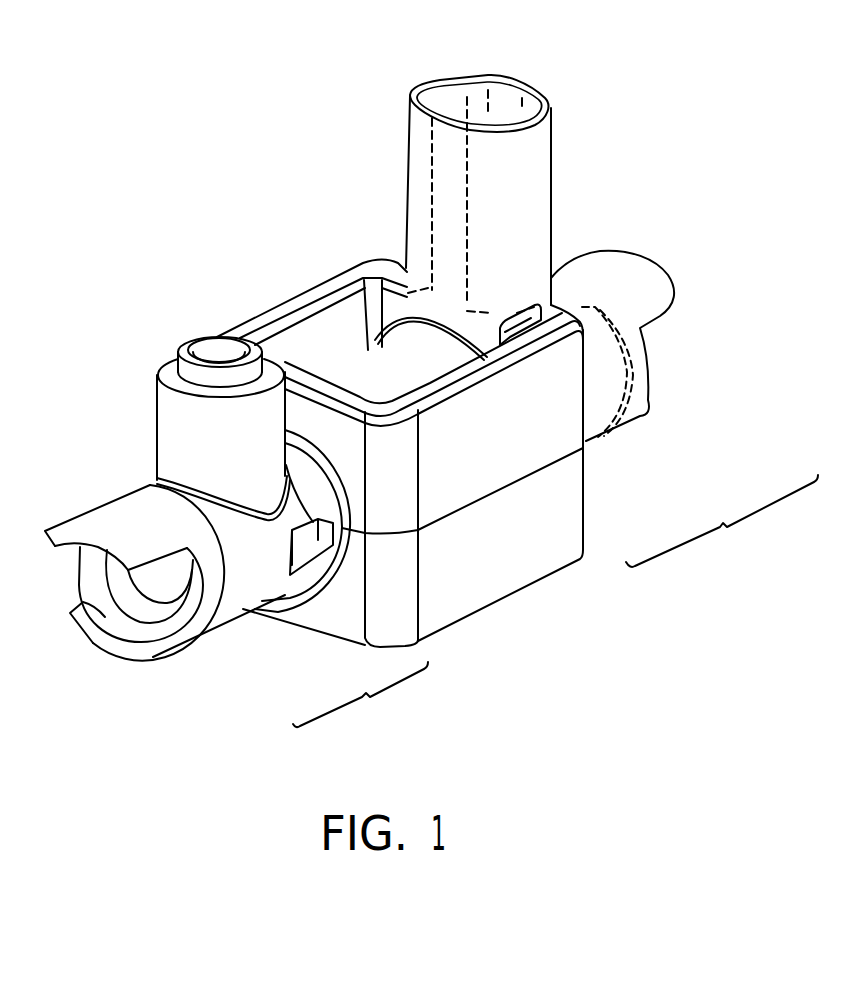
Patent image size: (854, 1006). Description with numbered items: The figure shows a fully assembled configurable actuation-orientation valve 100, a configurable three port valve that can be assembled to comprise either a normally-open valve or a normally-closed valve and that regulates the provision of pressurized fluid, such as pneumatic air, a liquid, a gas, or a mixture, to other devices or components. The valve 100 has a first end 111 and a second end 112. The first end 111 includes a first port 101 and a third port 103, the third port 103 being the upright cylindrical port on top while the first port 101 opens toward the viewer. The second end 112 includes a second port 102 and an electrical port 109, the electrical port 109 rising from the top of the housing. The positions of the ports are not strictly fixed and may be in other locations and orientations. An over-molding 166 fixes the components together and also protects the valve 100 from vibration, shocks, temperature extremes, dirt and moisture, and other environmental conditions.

The configurable actuation-orientation valve 100 is at (546, 641).
The first port 101 is at (110, 618).
The second port 102 is at (671, 345).
The third port 103 is at (217, 357).
The electrical port 109 is at (466, 90).
The first end 111 is at (360, 699).
The second end 112 is at (722, 521).
The over-molding 166 is at (323, 276).